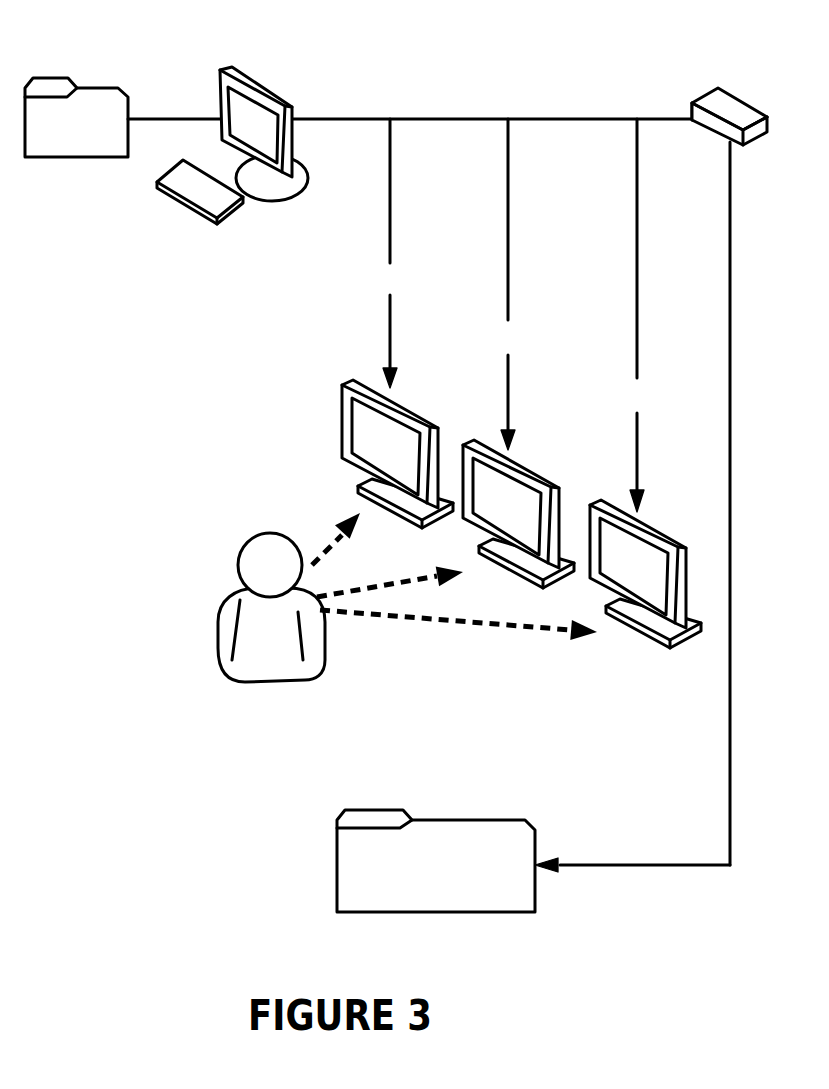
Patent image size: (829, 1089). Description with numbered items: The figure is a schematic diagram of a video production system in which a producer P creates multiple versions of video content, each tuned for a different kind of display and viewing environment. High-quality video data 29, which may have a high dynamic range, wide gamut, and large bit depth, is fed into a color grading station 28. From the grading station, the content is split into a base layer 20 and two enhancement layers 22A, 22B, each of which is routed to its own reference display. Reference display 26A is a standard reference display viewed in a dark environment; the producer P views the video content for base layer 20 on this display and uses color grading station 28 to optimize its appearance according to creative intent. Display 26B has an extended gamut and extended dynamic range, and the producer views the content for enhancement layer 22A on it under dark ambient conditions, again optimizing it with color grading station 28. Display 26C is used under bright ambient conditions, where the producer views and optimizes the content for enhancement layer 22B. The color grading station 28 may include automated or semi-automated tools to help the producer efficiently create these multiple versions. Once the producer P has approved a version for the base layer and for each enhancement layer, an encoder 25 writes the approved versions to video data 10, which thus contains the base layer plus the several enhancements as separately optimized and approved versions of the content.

The video data 10 is at (375, 808).
The base layer 20 is at (390, 215).
The enhancement layer 22A is at (508, 150).
The enhancement layer 22B is at (637, 195).
The encoder 25 is at (730, 118).
The reference display 26A is at (342, 460).
The display 26B is at (473, 527).
The display 26C is at (656, 647).
The color grading station 28 is at (253, 76).
The high-quality video data 29 is at (83, 88).
The producer P is at (227, 597).